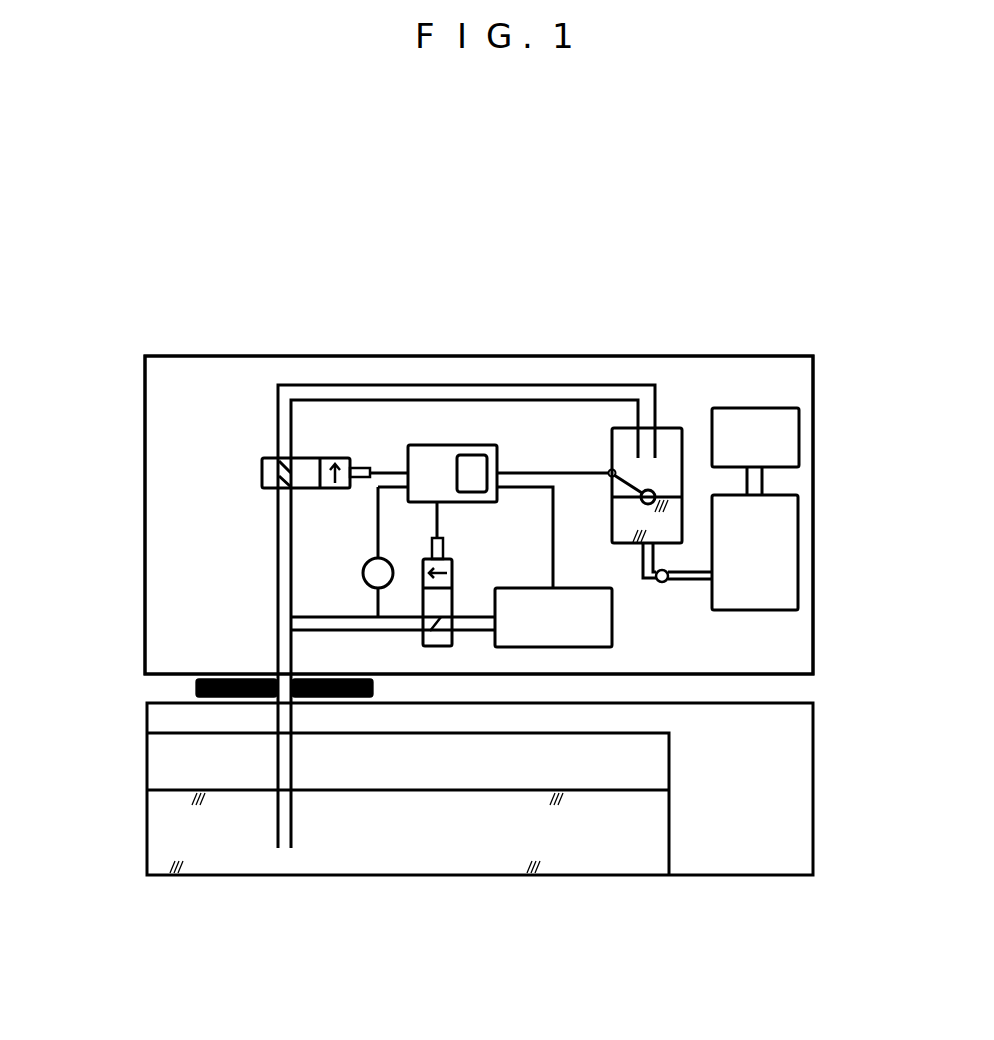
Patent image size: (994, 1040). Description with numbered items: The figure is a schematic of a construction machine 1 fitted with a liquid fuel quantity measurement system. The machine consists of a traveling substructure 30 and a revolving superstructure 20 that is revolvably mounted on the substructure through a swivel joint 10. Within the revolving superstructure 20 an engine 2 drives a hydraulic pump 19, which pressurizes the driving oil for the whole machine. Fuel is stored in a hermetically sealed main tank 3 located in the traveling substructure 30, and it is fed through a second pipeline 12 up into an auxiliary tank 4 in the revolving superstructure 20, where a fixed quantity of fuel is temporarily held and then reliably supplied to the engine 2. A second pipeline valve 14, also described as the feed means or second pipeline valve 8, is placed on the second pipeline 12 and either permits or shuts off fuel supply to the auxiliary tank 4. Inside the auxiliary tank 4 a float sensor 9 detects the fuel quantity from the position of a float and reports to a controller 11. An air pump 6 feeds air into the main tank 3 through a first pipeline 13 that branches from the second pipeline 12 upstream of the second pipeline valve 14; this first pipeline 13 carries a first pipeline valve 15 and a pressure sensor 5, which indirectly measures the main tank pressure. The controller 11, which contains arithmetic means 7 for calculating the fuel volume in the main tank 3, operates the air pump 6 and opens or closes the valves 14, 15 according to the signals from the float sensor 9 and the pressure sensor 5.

The apparatus 1 is at (884, 381).
The engine 2 is at (770, 610).
The main tank 3 is at (669, 820).
The auxiliary tank 4 is at (632, 492).
The pressure sensor 5 is at (363, 573).
The air pump 6 is at (612, 612).
The arithmetic means 7 is at (482, 455).
The second pipeline valve 8 is at (264, 457).
The float sensor 9 is at (612, 470).
The swivel joint 10 is at (196, 689).
The controller 11 is at (459, 451).
The second pipeline 12 is at (278, 573).
The first pipeline 13 is at (367, 632).
The second pipeline valve 14 is at (291, 440).
The first pipeline valve 15 is at (455, 573).
The hydraulic pump 19 is at (755, 408).
The revolving superstructure 20 is at (813, 445).
The traveling substructure 30 is at (813, 790).